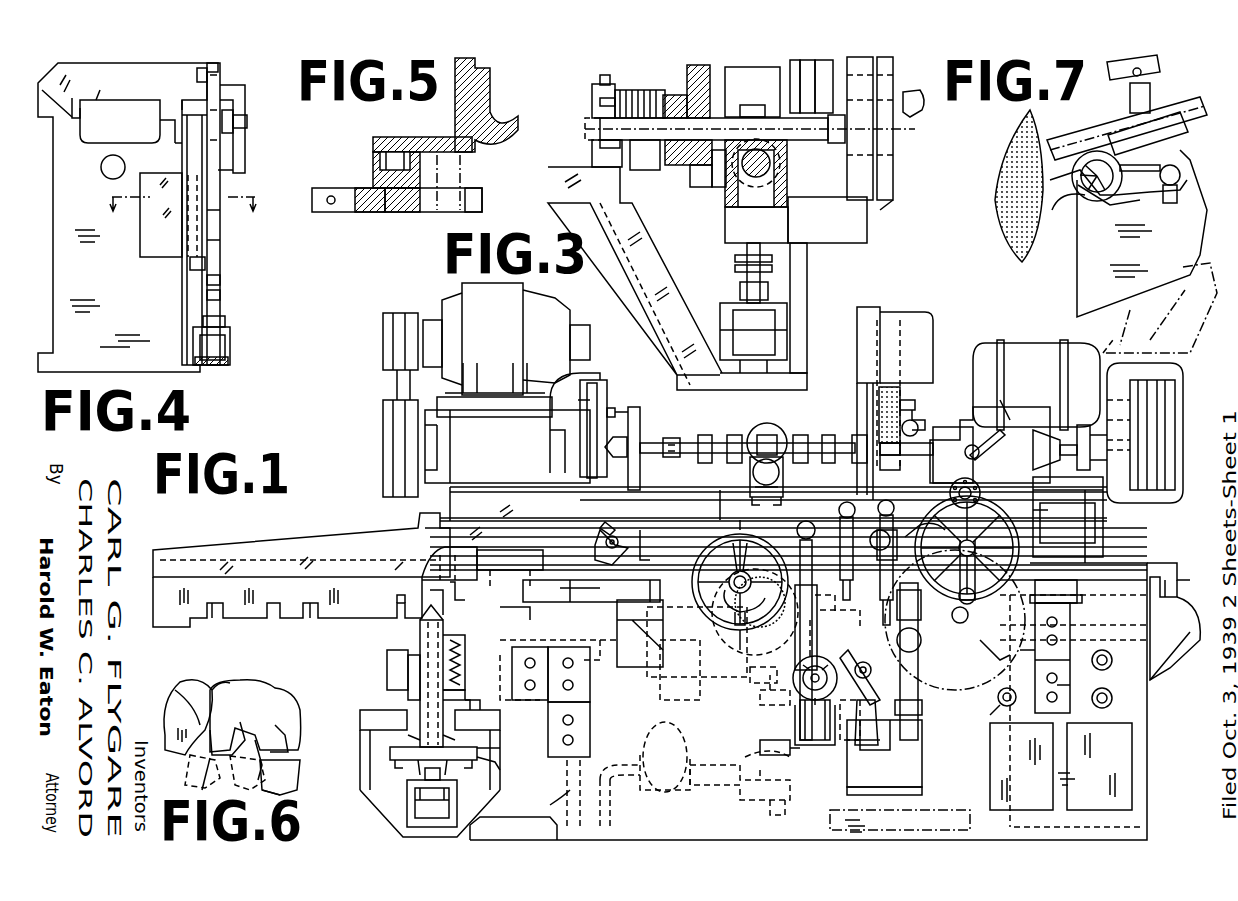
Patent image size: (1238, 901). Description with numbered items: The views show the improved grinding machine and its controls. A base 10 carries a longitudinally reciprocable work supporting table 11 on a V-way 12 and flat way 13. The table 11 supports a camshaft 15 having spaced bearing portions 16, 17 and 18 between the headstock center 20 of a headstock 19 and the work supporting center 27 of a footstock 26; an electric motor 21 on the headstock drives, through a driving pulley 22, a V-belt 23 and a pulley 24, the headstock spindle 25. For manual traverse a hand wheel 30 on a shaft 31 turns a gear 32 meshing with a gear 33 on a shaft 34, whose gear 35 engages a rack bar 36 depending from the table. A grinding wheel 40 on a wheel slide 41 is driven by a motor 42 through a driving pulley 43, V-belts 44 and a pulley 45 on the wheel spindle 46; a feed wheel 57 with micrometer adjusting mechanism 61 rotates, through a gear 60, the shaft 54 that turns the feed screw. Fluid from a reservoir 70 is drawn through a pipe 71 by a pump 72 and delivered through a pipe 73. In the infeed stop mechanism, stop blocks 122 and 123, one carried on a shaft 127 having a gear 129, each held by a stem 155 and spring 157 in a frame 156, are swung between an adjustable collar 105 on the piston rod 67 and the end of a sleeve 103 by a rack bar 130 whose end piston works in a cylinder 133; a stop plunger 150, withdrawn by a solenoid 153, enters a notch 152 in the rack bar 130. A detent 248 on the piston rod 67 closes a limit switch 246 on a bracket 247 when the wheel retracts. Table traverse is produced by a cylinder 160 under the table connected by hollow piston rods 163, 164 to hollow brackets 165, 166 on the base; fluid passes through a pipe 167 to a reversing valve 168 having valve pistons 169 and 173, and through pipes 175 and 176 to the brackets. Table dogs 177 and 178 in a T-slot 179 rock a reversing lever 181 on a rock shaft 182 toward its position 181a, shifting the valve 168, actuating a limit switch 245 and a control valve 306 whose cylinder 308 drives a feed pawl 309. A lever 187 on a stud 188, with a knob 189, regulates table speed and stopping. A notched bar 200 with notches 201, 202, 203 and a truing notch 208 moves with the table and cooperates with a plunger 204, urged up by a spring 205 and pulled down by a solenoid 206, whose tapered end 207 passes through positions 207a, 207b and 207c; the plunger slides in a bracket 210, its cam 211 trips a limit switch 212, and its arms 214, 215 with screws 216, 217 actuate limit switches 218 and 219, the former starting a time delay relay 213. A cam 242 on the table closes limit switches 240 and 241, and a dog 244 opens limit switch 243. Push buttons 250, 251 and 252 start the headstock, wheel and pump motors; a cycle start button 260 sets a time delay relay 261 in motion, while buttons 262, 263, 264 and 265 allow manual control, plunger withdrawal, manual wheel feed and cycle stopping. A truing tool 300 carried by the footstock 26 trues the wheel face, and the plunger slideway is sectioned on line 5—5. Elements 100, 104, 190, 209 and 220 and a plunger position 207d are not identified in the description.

In FIG. 4, the base 10 is at (185, 368).
In FIG. 5, the base 10 is at (485, 92).
In FIG. 1, the base 10 is at (1130, 712).
In FIG. 4, the bed 11 is at (104, 92).
In FIG. 7, the bed 11 is at (1130, 318).
In FIG. 1, the bed 11 is at (470, 508).
In FIG. 4, the recess in base 12 is at (78, 130).
In FIG. 4, the plate 13 is at (185, 108).
In FIG. 1, the work spindle shaft 15 is at (716, 430).
In FIG. 1, the collar 16 is at (670, 437).
In FIG. 1, the chuck 17 is at (772, 432).
In FIG. 1, the collar 18 is at (852, 438).
In FIG. 1, the headstock housing 19 is at (575, 395).
In FIG. 1, the center 20 is at (608, 450).
In FIG. 1, the motor 21 is at (470, 304).
In FIG. 1, the pulley 22 is at (382, 343).
In FIG. 1, the belt 23 is at (410, 390).
In FIG. 1, the pulley 24 is at (383, 420).
In FIG. 1, the headstock 25 is at (425, 460).
In FIG. 7, the wheel slide body 26 is at (1077, 278).
In FIG. 1, the wheel slide body 26 is at (1012, 427).
In FIG. 7, the wheel spindle bearing 27 is at (1050, 246).
In FIG. 1, the wheel spindle bearing 27 is at (893, 460).
In FIG. 1, the hand wheel 30 is at (705, 598).
In FIG. 1, the shaft 31 is at (745, 525).
In FIG. 1, the gear 32 is at (725, 612).
In FIG. 1, the pinion 33 is at (735, 622).
In FIG. 1, the shaft 34 is at (740, 645).
In FIG. 1, the gear 35 is at (755, 620).
In FIG. 1, the bracket 36 is at (668, 620).
In FIG. 7, the grinding wheel 40 is at (1008, 212).
In FIG. 1, the grinding wheel 40 is at (893, 325).
In FIG. 1, the wheel slide 41 is at (942, 428).
In FIG. 1, the wheel motor 42 is at (985, 350).
In FIG. 1, the tailstock 43 is at (1175, 385).
In FIG. 1, the tailstock spindle 44 is at (1165, 428).
In FIG. 1, the tailstock center 45 is at (1180, 480).
In FIG. 1, the tailstock sleeve 46 is at (1118, 500).
In FIG. 1, the control lever 54 is at (921, 645).
In FIG. 1, the lever arc 57 is at (975, 618).
In FIG. 1, the knob 60 is at (991, 695).
In FIG. 1, the dial 61 is at (978, 485).
In FIG. 3, the bar 67 is at (600, 80).
In FIG. 1, the pipe 70 is at (572, 785).
In FIG. 1, the pipe 71 is at (612, 808).
In FIG. 1, the pump 72 is at (668, 795).
In FIG. 1, the valve 73 is at (715, 775).
In FIG. 1, the lever 100 is at (822, 601).
In FIG. 3, the plate 103 is at (740, 68).
In FIG. 3, the plate 104 is at (895, 185).
In FIG. 3, the nut 105 is at (685, 70).
In FIG. 3, the sleeve 122 is at (718, 190).
In FIG. 3, the shaft 123 is at (706, 128).
In FIG. 3, the bracket 127 is at (760, 282).
In FIG. 3, the box 129 is at (755, 106).
In FIG. 3, the column 130 is at (790, 165).
In FIG. 3, the shaft end 133 is at (783, 128).
In FIG. 3, the pin 150 is at (745, 260).
In FIG. 3, the bushing 152 is at (688, 130).
In FIG. 3, the block 153 is at (725, 320).
In FIG. 3, the nut 155 is at (650, 90).
In FIG. 3, the washer 156 is at (700, 188).
In FIG. 3, the lock nut 157 is at (612, 88).
In FIG. 1, the link 160 is at (605, 610).
In FIG. 1, the trough 163 is at (470, 580).
In FIG. 1, the bracket 164 is at (1160, 570).
In FIG. 1, the bracket 165 is at (425, 587).
In FIG. 1, the bracket 166 is at (1183, 650).
In FIG. 1, the pipe 167 is at (760, 760).
In FIG. 1, the lever 168 is at (760, 733).
In FIG. 1, the lever 169 is at (758, 698).
In FIG. 1, the link 173 is at (834, 710).
In FIG. 1, the housing 175 is at (690, 680).
In FIG. 1, the panel 176 is at (1100, 625).
In FIG. 1, the lever 177 is at (615, 532).
In FIG. 1, the hand wheel 178 is at (967, 550).
In FIG. 4, the stop 179 is at (196, 75).
In FIG. 1, the stop 179 is at (650, 530).
In FIG. 1, the lever 181 is at (840, 515).
In FIG. 1, the lever 181a is at (878, 520).
In FIG. 1, the link 182 is at (850, 660).
In FIG. 1, the lever 187 is at (800, 540).
In FIG. 1, the box 188 is at (884, 753).
In FIG. 1, the dial 189 is at (748, 680).
In FIG. 1, the lever 190 is at (760, 718).
In FIG. 4, the gauge block 200 is at (180, 120).
In FIG. 6, the gauge block 200 is at (295, 690).
In FIG. 1, the gauge block 200 is at (268, 608).
In FIG. 4, the notch 201 is at (185, 140).
In FIG. 1, the notch 201 is at (216, 612).
In FIG. 1, the notch 202 is at (310, 612).
In FIG. 6, the notch 203 is at (215, 688).
In FIG. 1, the notch 203 is at (395, 605).
In FIG. 4, the rod 204 is at (222, 250).
In FIG. 5, the rod 204 is at (395, 210).
In FIG. 1, the rod 204 is at (420, 700).
In FIG. 1, the spring 205 is at (468, 662).
In FIG. 4, the housing 206 is at (232, 333).
In FIG. 1, the housing 206 is at (410, 822).
In FIG. 4, the pawl 207 is at (222, 172).
In FIG. 6, the pawl 207 is at (292, 790).
In FIG. 1, the pawl 207 is at (468, 650).
In FIG. 6, the pawl 207a is at (290, 770).
In FIG. 6, the pawl 207b is at (245, 728).
In FIG. 6, the pawl 207c is at (170, 690).
In FIG. 6, the pawl 207d is at (200, 775).
In FIG. 6, the arm 208 is at (288, 745).
In FIG. 1, the arm 208 is at (518, 618).
In FIG. 4, the pin 209 is at (192, 272).
In FIG. 5, the pin 209 is at (378, 153).
In FIG. 1, the pin 209 is at (400, 740).
In FIG. 4, the clamp 210 is at (160, 258).
In FIG. 5, the clamp 210 is at (458, 112).
In FIG. 1, the clamp 210 is at (472, 698).
In FIG. 4, the rod 211 is at (220, 212).
In FIG. 5, the rod 211 is at (368, 212).
In FIG. 1, the rod 211 is at (420, 655).
In FIG. 1, the block 212 is at (387, 660).
In FIG. 1, the panel 213 is at (1005, 742).
In FIG. 4, the plate 214 is at (222, 295).
In FIG. 5, the plate 214 is at (322, 188).
In FIG. 1, the plate 214 is at (388, 752).
In FIG. 1, the pin 215 is at (485, 764).
In FIG. 4, the screw 216 is at (222, 280).
In FIG. 5, the screw 216 is at (334, 204).
In FIG. 1, the screw 216 is at (400, 798).
In FIG. 5, the bolt 217 is at (460, 190).
In FIG. 1, the bolt 217 is at (480, 758).
In FIG. 1, the block 218 is at (368, 712).
In FIG. 1, the screw 219 is at (485, 712).
In FIG. 1, the rod 220 is at (735, 520).
In FIG. 4, the bar 240 is at (248, 122).
In FIG. 1, the bar 240 is at (510, 561).
In FIG. 1, the bar 241 is at (625, 590).
In FIG. 4, the plate 242 is at (222, 92).
In FIG. 1, the plate 242 is at (375, 565).
In FIG. 1, the block 243 is at (1058, 590).
In FIG. 1, the box 244 is at (1060, 515).
In FIG. 1, the lever 245 is at (925, 685).
In FIG. 3, the arm 246 is at (590, 212).
In FIG. 3, the washer 247 is at (738, 248).
In FIG. 3, the nut 248 is at (596, 150).
In FIG. 1, the control box 250 is at (535, 700).
In FIG. 1, the push button 251 is at (590, 680).
In FIG. 1, the push button 252 is at (590, 722).
In FIG. 1, the knob 260 is at (1115, 695).
In FIG. 1, the panel 261 is at (1120, 750).
In FIG. 1, the knob 262 is at (1072, 684).
In FIG. 1, the knob 263 is at (1105, 655).
In FIG. 1, the knob 264 is at (985, 710).
In FIG. 1, the knob 265 is at (1040, 655).
In FIG. 7, the tool holder 300 is at (1055, 148).
In FIG. 1, the tool holder 300 is at (968, 458).
In FIG. 1, the base plate 306 is at (880, 806).
In FIG. 1, the bracket 308 is at (922, 790).
In FIG. 1, the lever 309 is at (905, 535).
In FIG. 4, the section line 5- 5 is at (180, 197).